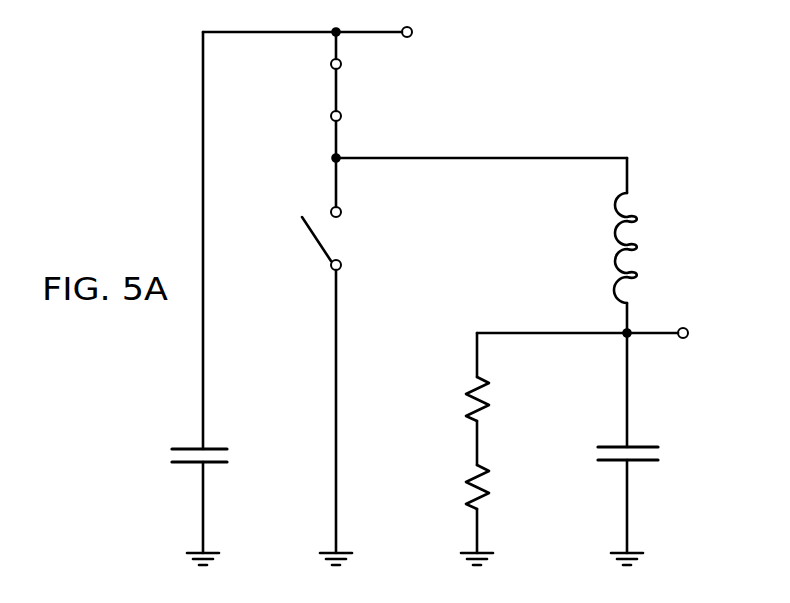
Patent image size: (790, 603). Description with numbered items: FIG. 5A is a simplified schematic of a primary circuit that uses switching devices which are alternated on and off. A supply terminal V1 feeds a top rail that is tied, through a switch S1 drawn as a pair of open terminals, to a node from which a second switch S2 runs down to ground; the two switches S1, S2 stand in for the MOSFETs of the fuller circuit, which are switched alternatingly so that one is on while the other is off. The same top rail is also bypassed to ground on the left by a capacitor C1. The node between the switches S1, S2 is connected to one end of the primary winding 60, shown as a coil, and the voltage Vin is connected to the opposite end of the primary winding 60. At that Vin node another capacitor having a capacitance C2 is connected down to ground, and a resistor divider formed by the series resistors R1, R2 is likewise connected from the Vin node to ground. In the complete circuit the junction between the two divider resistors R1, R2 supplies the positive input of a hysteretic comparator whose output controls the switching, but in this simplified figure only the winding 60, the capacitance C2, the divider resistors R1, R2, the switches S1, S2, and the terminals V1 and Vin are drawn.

The primary winding 60 is at (603, 253).
The capacitor C1 is at (177, 459).
The capacitance C2 is at (649, 457).
The resistor R1 is at (458, 399).
The resistor R2 is at (458, 487).
The switch S1 is at (359, 95).
The switch S2 is at (345, 214).
The supply voltage terminal V1 is at (331, 34).
The voltage Vin is at (610, 333).